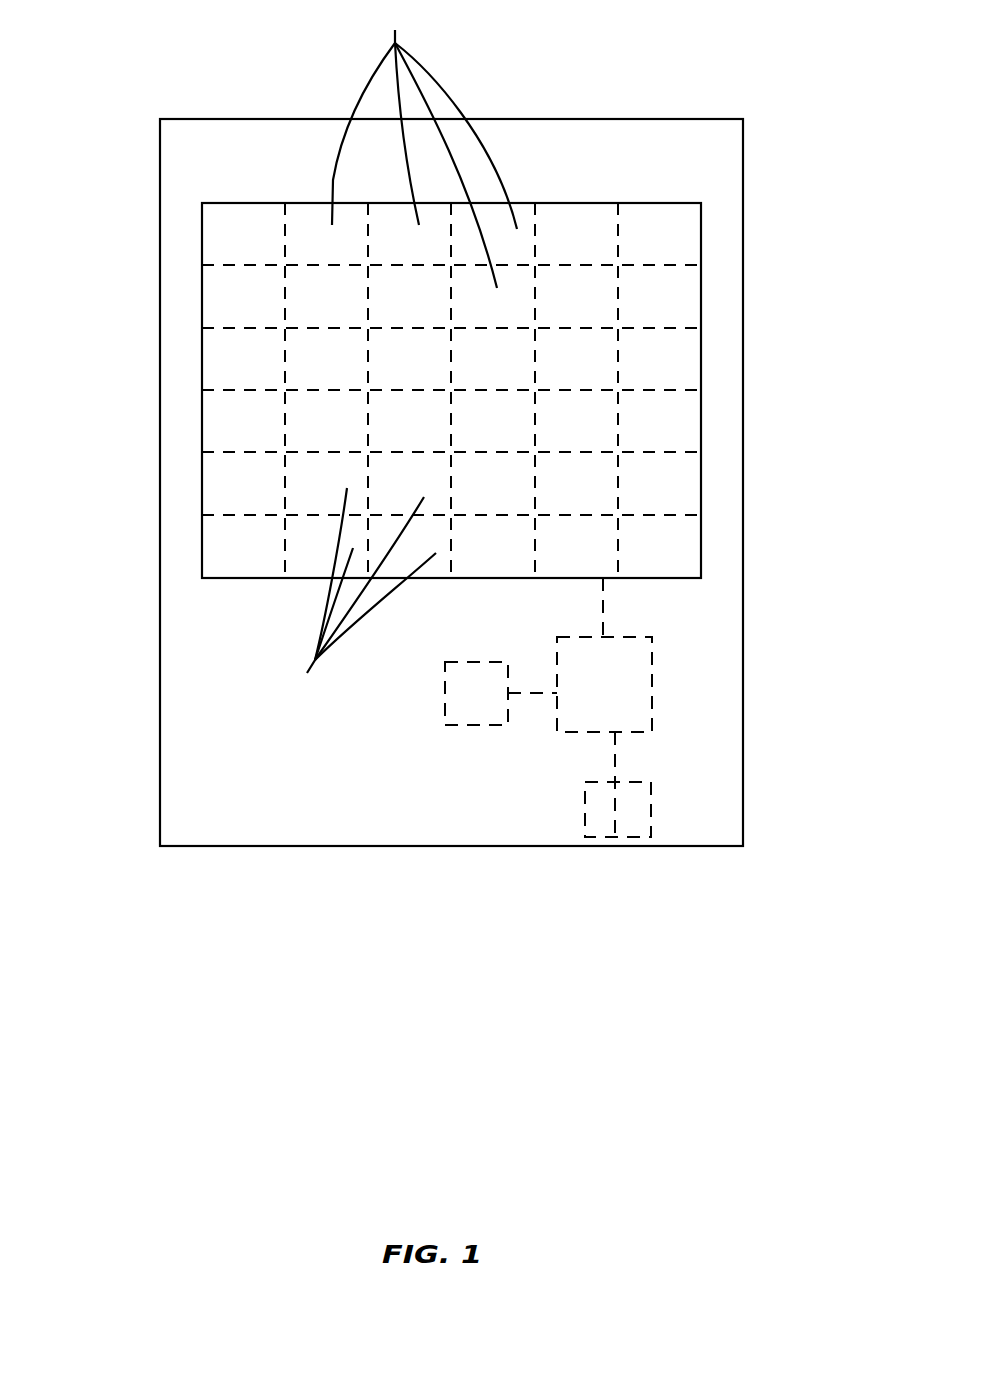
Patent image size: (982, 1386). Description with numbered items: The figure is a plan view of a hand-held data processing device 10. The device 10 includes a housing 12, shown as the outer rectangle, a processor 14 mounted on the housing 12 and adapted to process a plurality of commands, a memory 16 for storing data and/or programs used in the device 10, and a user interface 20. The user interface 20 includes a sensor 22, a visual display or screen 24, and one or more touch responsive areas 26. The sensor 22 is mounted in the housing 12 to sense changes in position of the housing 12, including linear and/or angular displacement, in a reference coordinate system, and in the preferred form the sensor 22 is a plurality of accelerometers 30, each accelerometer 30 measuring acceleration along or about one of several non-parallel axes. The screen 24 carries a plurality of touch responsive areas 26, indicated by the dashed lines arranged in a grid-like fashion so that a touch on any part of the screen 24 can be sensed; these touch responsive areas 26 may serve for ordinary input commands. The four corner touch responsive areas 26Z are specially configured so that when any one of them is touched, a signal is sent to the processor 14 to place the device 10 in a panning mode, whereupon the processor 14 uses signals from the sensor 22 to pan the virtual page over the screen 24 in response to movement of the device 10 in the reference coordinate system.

The hand-held data processing device 10 is at (493, 449).
The housing 12 is at (723, 165).
The processor 14 is at (652, 678).
The memory 16 is at (476, 727).
The user interface 20 is at (462, 401).
The sensor 22 is at (620, 843).
The visual display or screen 24 is at (248, 471).
The touch responsive areas 26 is at (399, 354).
The corner touch responsive areas 26Z is at (678, 232).
The accelerometer 30 is at (652, 800).